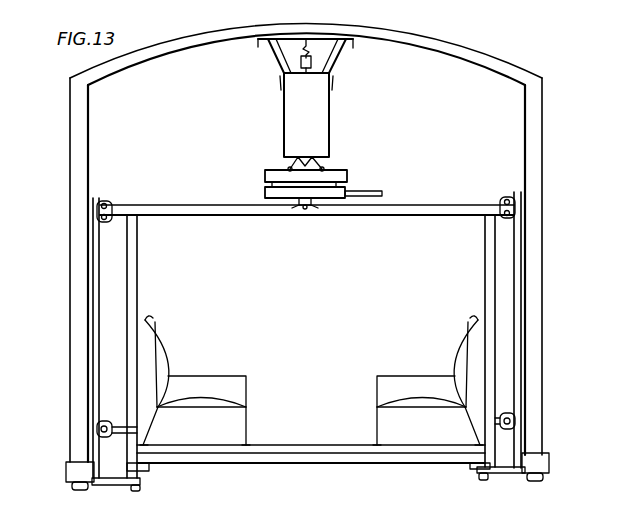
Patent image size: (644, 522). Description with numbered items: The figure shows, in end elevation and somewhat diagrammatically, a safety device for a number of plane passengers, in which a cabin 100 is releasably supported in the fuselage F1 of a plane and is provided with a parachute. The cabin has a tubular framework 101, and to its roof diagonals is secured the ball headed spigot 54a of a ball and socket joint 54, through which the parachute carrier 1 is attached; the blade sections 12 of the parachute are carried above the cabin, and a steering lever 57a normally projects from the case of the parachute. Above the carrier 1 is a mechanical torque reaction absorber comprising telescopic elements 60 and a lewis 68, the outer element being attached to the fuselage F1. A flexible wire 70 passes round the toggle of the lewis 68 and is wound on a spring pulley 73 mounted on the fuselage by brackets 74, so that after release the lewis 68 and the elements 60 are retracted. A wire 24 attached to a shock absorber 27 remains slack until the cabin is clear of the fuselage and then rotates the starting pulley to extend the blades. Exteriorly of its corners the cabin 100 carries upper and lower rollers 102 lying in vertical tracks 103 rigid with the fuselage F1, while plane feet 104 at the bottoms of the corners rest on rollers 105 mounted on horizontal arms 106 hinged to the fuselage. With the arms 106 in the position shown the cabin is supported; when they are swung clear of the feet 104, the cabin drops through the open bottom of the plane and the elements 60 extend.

The fuselage F1 is at (70, 84).
The carrier 1 is at (280, 195).
The blade sections 12 is at (280, 176).
The wire 24 is at (338, 62).
The shock absorber 27 is at (310, 52).
The ball and socket joint 54 is at (311, 206).
The ball headed spigot 54a is at (301, 206).
The steering lever 57a is at (365, 192).
The telescopic elements 60 is at (308, 127).
The lewis 68 is at (320, 170).
The flexible wire 70 is at (298, 58).
The spring pulley 73 is at (292, 48).
The brackets 74 is at (282, 44).
The cabin 100 is at (457, 278).
The tubular framework 101 is at (133, 242).
The rollers 102 is at (100, 212).
The vertical tracks 103 is at (95, 318).
The plane feet 104 is at (150, 470).
The rollers 105 is at (137, 488).
The horizontal arms 106 is at (110, 484).